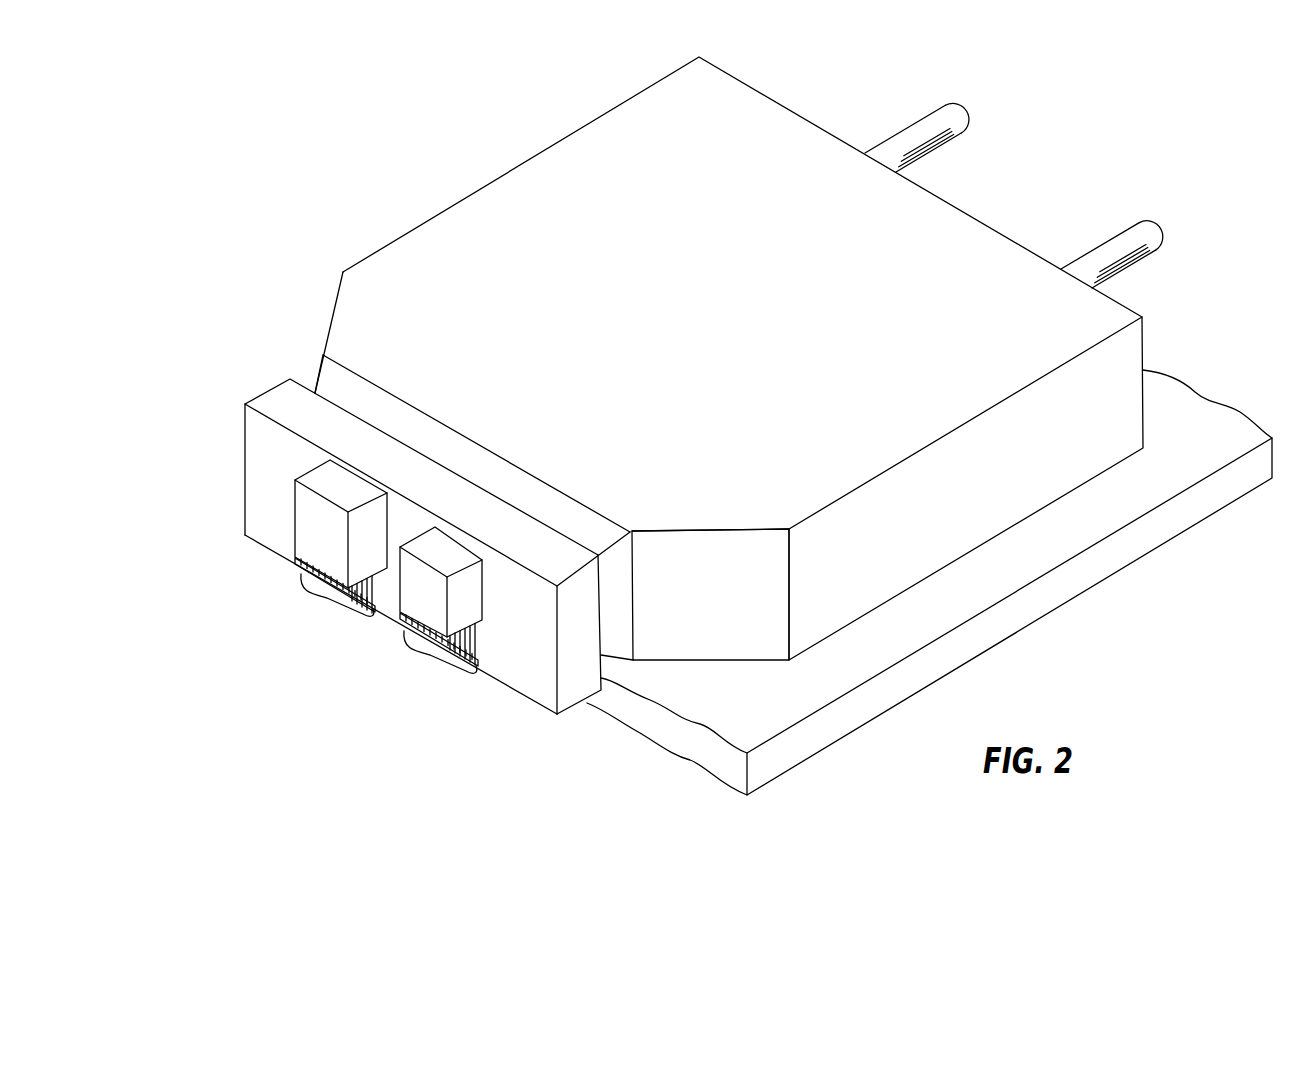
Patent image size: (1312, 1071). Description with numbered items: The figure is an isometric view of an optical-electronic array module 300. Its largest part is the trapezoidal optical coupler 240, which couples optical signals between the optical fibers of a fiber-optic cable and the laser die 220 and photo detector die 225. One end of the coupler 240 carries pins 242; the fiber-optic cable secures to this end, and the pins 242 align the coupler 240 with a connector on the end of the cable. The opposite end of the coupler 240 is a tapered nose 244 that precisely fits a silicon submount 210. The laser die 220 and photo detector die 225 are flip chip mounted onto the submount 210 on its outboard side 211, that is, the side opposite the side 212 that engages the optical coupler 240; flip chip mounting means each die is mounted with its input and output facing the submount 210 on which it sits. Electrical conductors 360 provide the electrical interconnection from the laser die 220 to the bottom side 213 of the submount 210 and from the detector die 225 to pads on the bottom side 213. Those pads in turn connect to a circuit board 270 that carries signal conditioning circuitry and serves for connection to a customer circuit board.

The module 300 is at (326, 121).
The optical coupler 240 is at (759, 335).
The pins 242 is at (1098, 238).
The tapered nose 244 is at (426, 426).
The side 212 is at (612, 570).
The silicon submount 210 is at (377, 616).
The outboard side 211 is at (262, 503).
The bottom side 213 is at (568, 728).
The laser die 220 is at (268, 569).
The photo detector die 225 is at (335, 636).
The electrical conductors 360 is at (386, 706).
The circuit board 270 is at (929, 582).